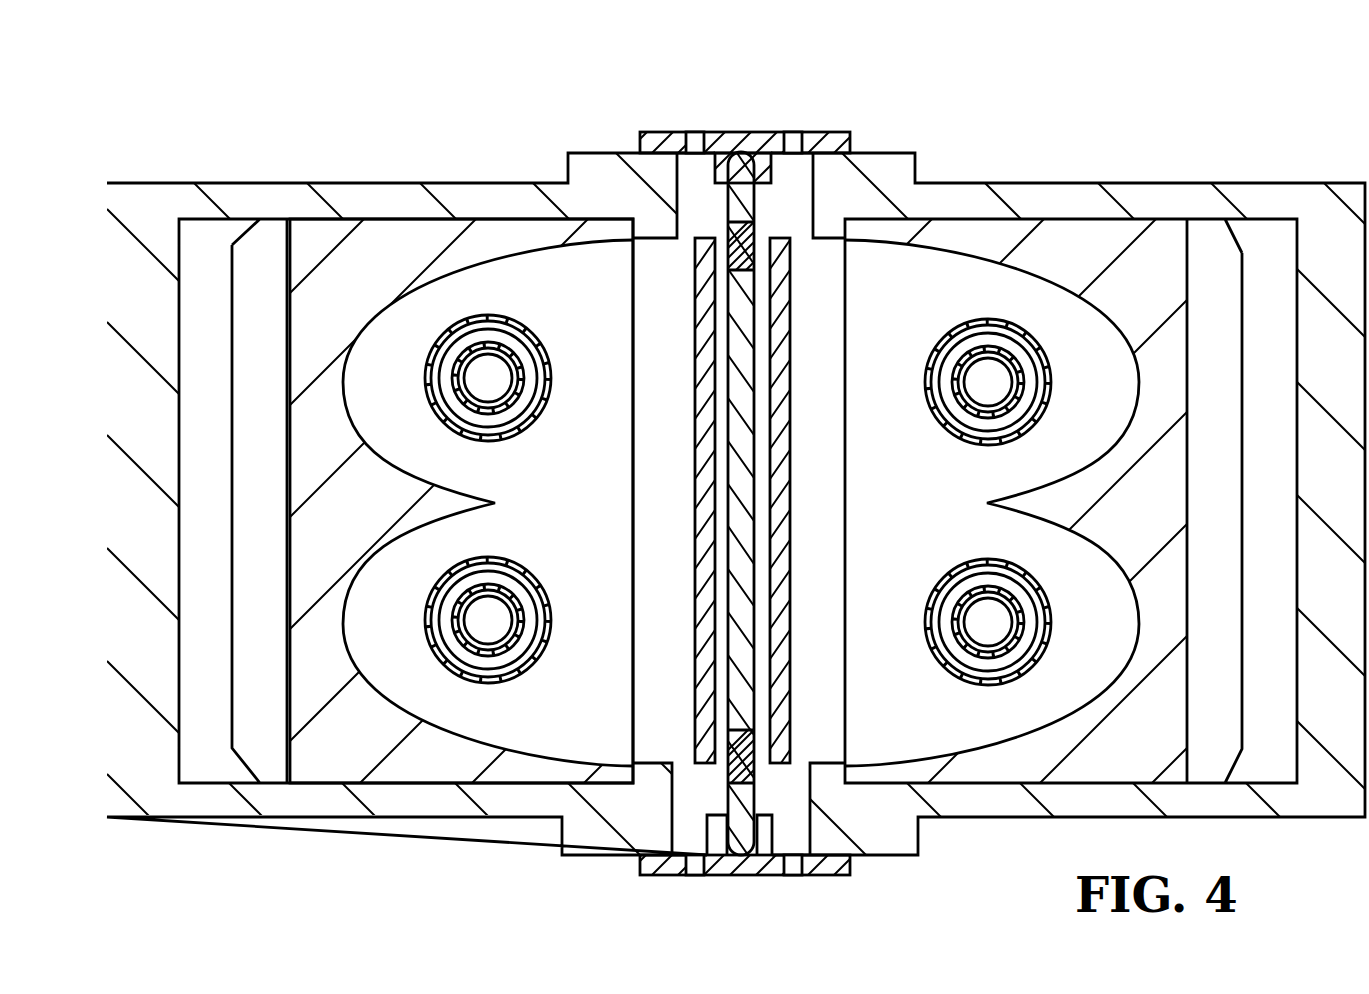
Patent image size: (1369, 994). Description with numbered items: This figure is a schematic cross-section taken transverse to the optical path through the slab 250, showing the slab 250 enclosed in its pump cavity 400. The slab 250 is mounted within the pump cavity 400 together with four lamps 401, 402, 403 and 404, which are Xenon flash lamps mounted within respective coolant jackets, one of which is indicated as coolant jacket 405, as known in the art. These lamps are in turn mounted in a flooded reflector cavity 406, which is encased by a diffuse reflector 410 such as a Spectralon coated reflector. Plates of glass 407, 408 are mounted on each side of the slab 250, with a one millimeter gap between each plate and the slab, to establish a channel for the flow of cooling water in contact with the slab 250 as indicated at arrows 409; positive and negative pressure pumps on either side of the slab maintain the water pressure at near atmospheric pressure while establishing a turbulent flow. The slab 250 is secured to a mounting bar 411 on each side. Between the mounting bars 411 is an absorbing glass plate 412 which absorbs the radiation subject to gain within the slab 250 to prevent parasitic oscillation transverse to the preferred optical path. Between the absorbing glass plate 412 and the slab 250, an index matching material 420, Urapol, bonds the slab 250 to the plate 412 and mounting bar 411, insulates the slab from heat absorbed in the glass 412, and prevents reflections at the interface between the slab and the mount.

The pump cavity 400 is at (1176, 183).
The diffuse reflector 410 is at (394, 230).
The flooded reflector cavity 406 is at (585, 535).
The lamp 403 is at (503, 346).
The lamp 404 is at (500, 657).
The lamp 402 is at (968, 348).
The lamp 401 is at (975, 590).
The coolant jacket 405 is at (930, 603).
The glass plate 407 is at (695, 437).
The glass plate 408 is at (790, 443).
The slab 250 is at (745, 527).
The cooling water flow path 409 is at (718, 233).
The mounting bar 411 is at (737, 857).
The absorbing glass plate 412 is at (727, 767).
The index matching material 420 is at (753, 737).